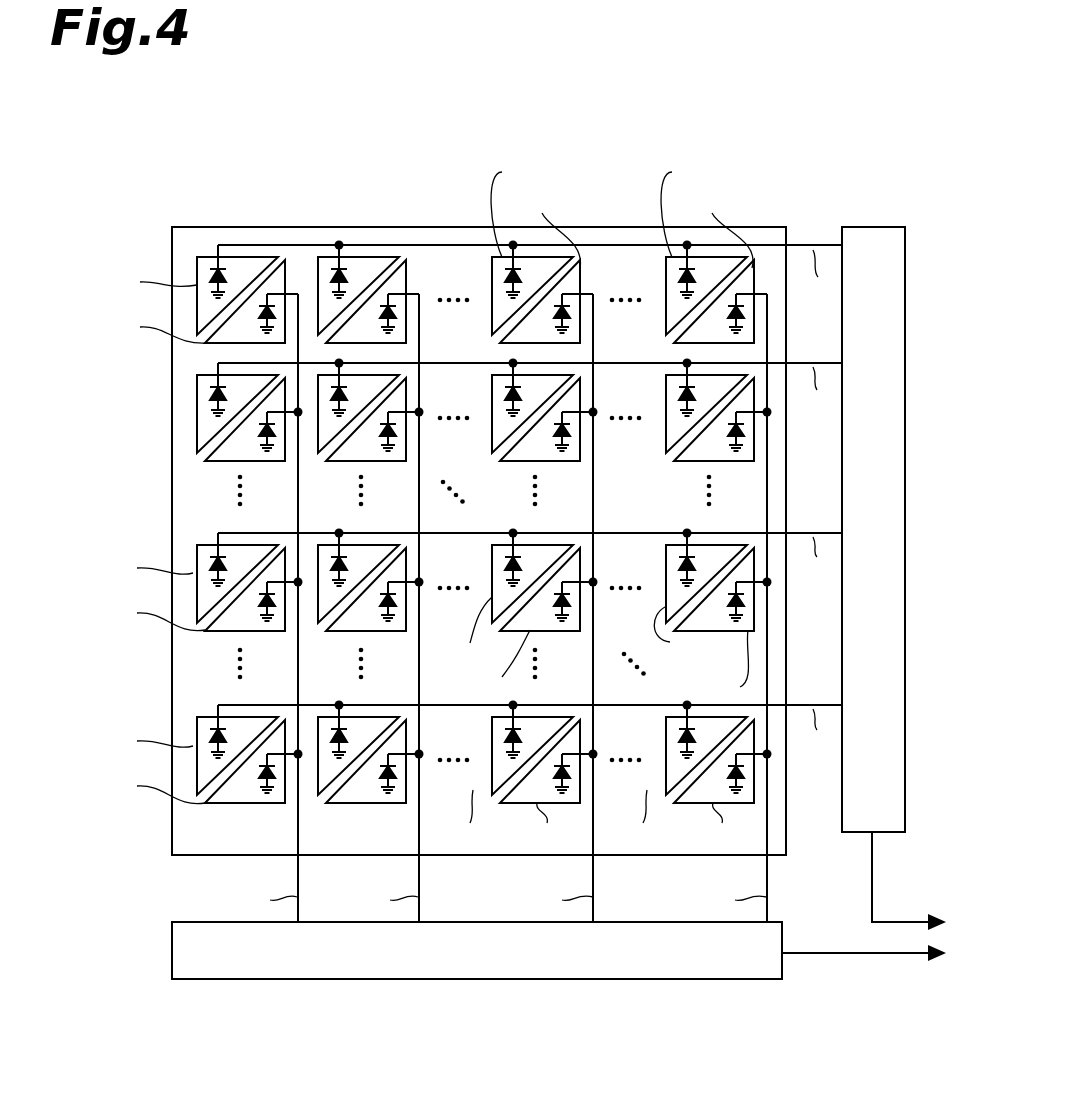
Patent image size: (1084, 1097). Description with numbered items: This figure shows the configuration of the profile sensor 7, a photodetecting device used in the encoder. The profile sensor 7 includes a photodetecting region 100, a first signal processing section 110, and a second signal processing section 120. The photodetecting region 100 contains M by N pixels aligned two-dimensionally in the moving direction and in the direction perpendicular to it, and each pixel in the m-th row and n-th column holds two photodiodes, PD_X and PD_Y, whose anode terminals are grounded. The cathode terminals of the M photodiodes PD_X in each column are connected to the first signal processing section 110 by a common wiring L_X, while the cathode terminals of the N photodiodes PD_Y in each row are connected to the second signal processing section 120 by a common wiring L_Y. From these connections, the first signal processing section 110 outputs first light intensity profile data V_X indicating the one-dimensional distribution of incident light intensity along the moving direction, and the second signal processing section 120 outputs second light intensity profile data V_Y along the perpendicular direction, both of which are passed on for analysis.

The profile sensor 7 is at (430, 145).
The photodetecting region 100 is at (287, 227).
The first signal processing section 110 is at (312, 980).
The second signal processing section 120 is at (875, 227).